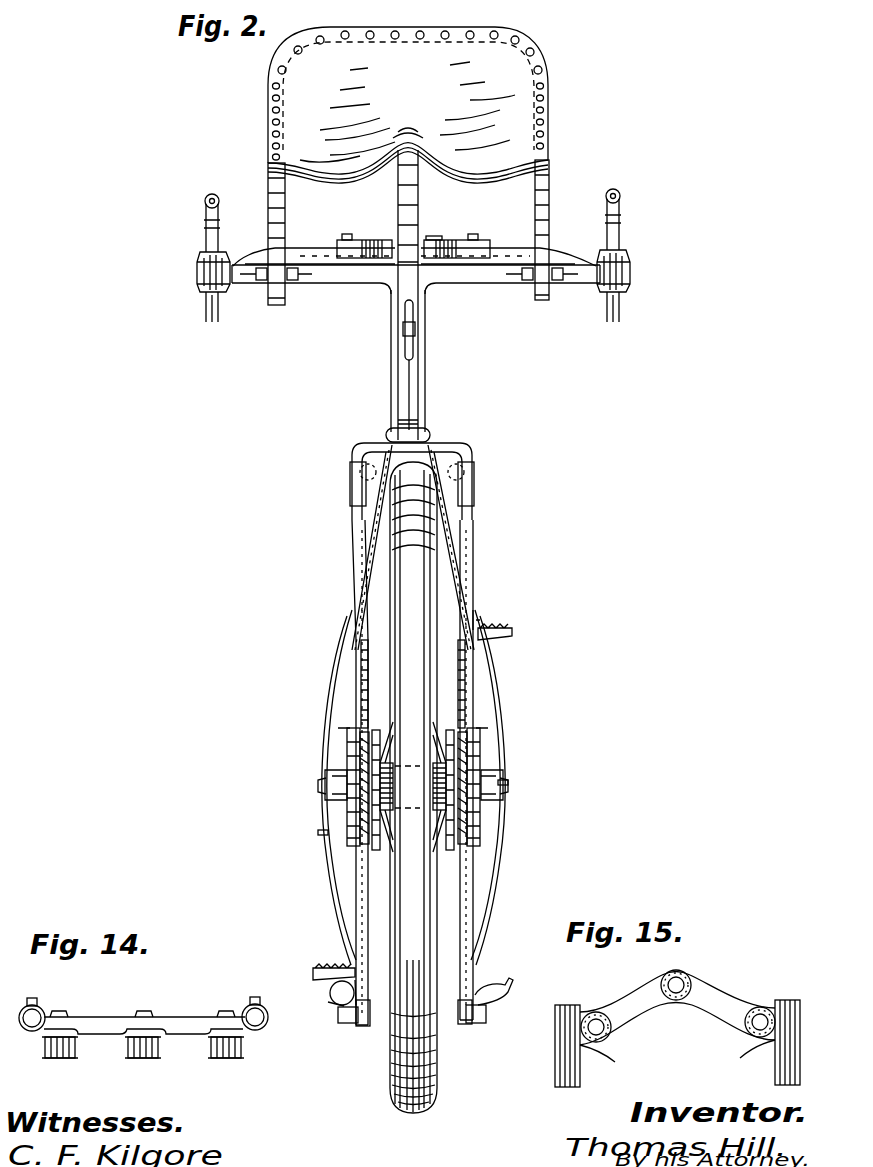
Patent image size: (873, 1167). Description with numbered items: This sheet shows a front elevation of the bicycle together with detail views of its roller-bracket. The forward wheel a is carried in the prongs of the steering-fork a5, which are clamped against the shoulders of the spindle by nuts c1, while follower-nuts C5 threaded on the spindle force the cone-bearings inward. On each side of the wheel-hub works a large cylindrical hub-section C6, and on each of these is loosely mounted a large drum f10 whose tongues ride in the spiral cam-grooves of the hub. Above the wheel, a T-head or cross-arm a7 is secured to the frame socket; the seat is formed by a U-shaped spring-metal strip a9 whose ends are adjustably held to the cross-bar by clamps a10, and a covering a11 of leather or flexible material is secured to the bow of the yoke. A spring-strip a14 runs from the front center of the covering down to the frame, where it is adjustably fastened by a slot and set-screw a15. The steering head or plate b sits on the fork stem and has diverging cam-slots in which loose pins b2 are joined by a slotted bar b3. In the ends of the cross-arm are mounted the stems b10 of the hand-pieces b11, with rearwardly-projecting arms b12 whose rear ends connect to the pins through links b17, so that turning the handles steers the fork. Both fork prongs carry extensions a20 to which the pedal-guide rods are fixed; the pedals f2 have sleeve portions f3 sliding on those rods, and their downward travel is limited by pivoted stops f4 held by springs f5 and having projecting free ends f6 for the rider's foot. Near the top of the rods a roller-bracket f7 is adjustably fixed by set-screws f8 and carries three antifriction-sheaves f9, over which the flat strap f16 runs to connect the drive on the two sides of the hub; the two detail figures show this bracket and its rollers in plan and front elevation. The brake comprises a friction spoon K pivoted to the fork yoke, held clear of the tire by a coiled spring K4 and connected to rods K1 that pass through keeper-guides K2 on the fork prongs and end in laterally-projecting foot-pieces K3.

In FIG. 2, the forward wheel a is at (413, 787).
In FIG. 2, the steering-fork a5 is at (368, 512).
In FIG. 2, the T-head or cross-arm a7 is at (364, 275).
In FIG. 2, the U-shaped spring-metal strip a9 is at (287, 201).
In FIG. 2, the clamps a10 is at (272, 283).
In FIG. 2, the covering a11 is at (408, 105).
In FIG. 2, the spring-strip a14 is at (405, 290).
In FIG. 2, the slot and set-screw a15 is at (418, 336).
In FIG. 2, the extensions or arms a20 is at (348, 912).
In FIG. 2, the steering head or plate b is at (485, 246).
In FIG. 2, the loose pins b2 is at (349, 235).
In FIG. 2, the slotted bar or link b3 is at (436, 237).
In FIG. 2, the stems b10 is at (205, 308).
In FIG. 2, the hand-pieces b11 is at (204, 212).
In FIG. 2, the rearwardly-projecting arms b12 is at (197, 264).
In FIG. 2, the links b17 is at (250, 250).
In FIG. 2, the friction blade or spoon K is at (455, 441).
In FIG. 2, the rods K1 is at (350, 634).
In FIG. 2, the keeper-guides K2 is at (336, 729).
In FIG. 2, the foot-pieces K3 is at (320, 836).
In FIG. 2, the coiled spring K4 is at (402, 432).
In FIG. 2, the pedals f2 is at (320, 976).
In FIG. 15, the pedals f2 is at (600, 1038).
In FIG. 2, the sleeve portions f3 is at (482, 600).
In FIG. 2, the stops f4 is at (368, 1028).
In FIG. 2, the springs f5 is at (338, 1020).
In FIG. 2, the projecting free ends f6 is at (330, 993).
In FIG. 2, the roller-bracket f7 is at (350, 487).
In FIG. 14, the roller-bracket f7 is at (178, 1022).
In FIG. 15, the roller-bracket f7 is at (722, 998).
In FIG. 14, the set-screws f8 is at (34, 1005).
In FIG. 2, the antifriction-sheaves f9 is at (350, 470).
In FIG. 14, the antifriction-sheaves f9 is at (130, 1040).
In FIG. 2, the large drum f10 is at (347, 745).
In FIG. 2, the flat strap f16 is at (360, 692).
In FIG. 2, the follower-nuts C5 is at (338, 768).
In FIG. 2, the cylindrical hub-sections C6 is at (468, 838).
In FIG. 2, the nuts c1 is at (322, 788).